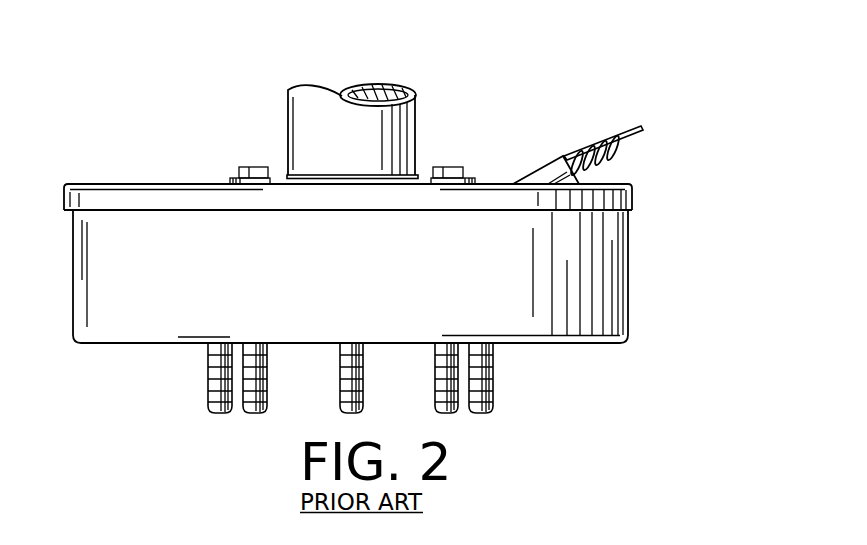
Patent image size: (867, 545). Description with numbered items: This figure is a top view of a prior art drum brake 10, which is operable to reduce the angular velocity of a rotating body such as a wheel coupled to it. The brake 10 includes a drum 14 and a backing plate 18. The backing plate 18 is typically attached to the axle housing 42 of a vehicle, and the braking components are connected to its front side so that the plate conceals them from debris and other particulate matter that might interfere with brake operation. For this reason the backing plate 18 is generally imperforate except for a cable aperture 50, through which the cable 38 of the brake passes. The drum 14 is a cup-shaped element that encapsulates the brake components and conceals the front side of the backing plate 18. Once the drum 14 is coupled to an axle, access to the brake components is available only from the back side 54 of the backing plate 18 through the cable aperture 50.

The prior art drum brake 10 is at (668, 188).
The drum 14 is at (112, 343).
The backing plate 18 is at (154, 184).
The cable 38 is at (626, 133).
The axle housing 42 is at (398, 130).
The cable aperture 50 is at (562, 154).
The back side 54 is at (492, 184).